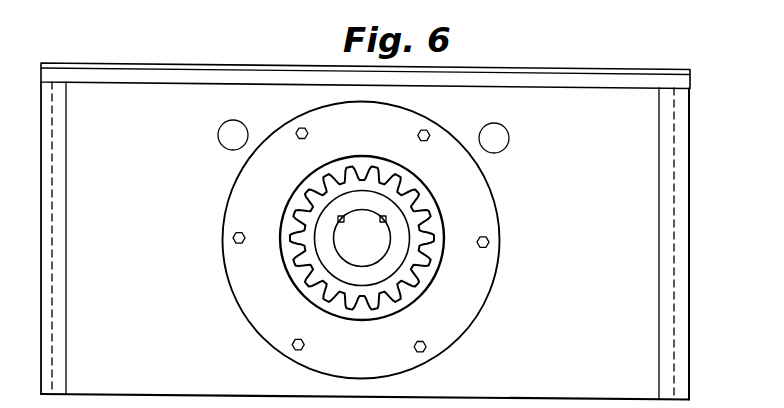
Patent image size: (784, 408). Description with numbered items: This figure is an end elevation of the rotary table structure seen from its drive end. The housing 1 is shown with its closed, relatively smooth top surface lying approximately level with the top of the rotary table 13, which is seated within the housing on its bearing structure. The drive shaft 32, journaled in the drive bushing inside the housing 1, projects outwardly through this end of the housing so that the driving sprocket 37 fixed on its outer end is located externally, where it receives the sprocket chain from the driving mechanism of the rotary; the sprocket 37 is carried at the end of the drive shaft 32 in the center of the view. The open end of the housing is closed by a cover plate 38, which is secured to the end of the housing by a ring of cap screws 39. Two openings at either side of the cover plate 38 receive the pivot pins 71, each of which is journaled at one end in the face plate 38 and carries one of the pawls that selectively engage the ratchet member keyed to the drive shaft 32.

The housing 1 is at (366, 223).
The rotary table 13 is at (680, 64).
The drive shaft 32 is at (424, 267).
The driving sprocket 37 is at (377, 253).
The cover plate 38 is at (491, 265).
The cap screws 39 is at (490, 241).
The pivot pin 71 is at (223, 146).